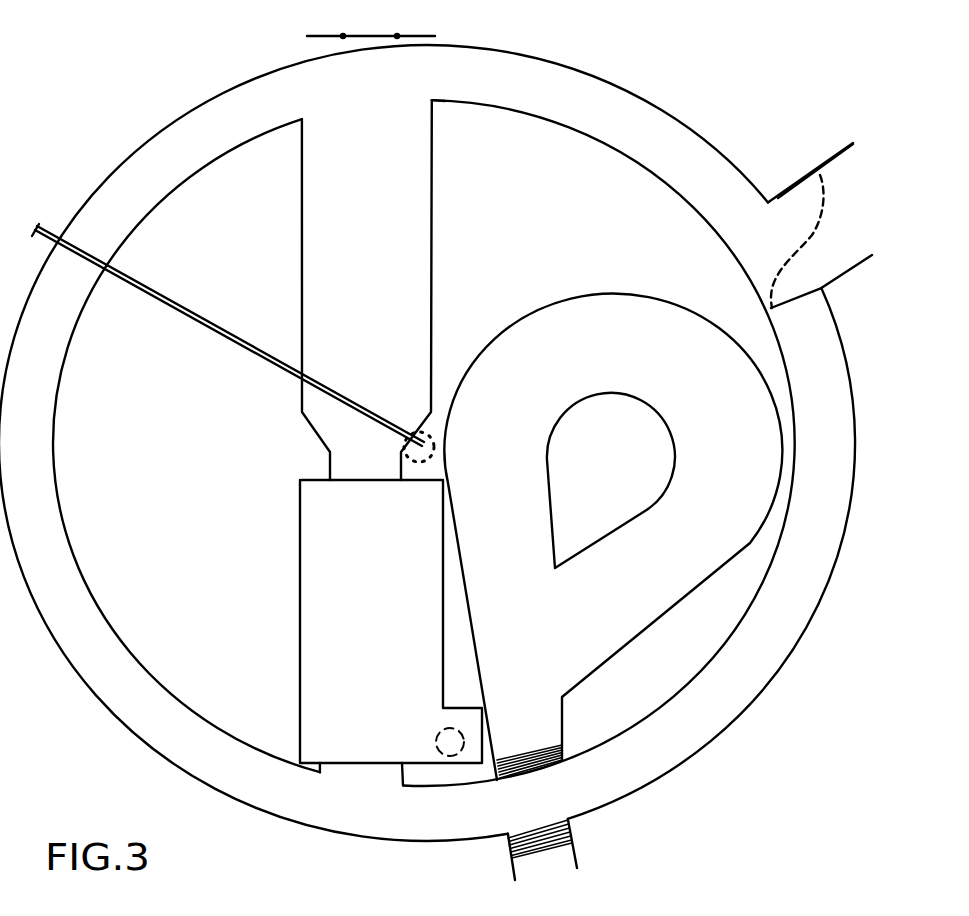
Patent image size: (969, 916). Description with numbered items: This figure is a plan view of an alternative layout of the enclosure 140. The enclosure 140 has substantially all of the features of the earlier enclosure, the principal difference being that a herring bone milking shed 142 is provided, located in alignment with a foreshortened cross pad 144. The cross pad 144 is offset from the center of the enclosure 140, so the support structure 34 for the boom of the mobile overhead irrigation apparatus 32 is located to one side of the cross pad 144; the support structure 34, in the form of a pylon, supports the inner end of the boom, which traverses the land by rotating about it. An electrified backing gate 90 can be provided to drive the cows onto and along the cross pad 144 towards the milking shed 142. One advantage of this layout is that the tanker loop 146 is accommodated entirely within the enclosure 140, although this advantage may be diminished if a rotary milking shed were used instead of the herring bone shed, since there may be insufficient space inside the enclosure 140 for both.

The enclosure 140 is at (155, 98).
The electrified backing gate 90 is at (388, 33).
The foreshortened cross pad 144 is at (313, 233).
The herring bone milking shed 142 is at (309, 578).
The mobile overhead irrigation apparatus 32 is at (190, 320).
The support structure 34 is at (424, 436).
The tanker loop 146 is at (636, 301).